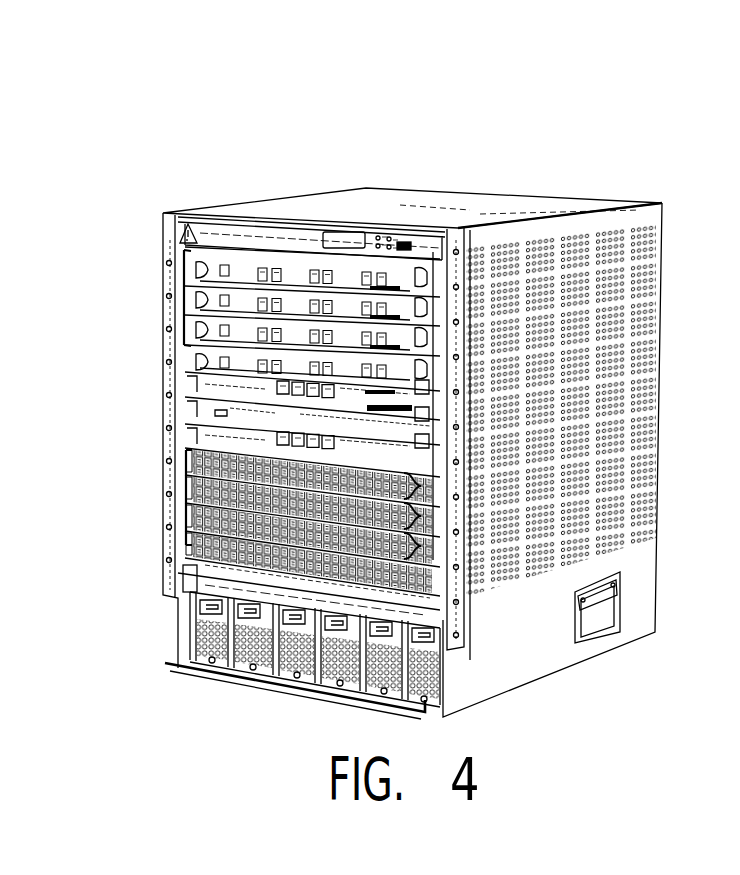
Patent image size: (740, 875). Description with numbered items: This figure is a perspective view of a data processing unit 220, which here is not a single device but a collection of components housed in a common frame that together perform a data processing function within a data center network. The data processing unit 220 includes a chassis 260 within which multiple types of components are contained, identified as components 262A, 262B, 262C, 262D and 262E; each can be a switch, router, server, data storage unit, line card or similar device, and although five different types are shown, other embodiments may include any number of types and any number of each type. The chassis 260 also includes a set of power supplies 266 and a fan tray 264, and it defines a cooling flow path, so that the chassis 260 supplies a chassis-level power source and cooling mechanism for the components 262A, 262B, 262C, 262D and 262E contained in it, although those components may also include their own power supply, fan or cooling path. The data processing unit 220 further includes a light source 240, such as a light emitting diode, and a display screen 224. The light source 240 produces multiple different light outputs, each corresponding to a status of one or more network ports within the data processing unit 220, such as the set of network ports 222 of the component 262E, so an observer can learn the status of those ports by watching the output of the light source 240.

The data processing unit 220 is at (204, 80).
The set of network ports 222 is at (412, 514).
The display screen 224 is at (333, 232).
The light source 240 is at (383, 232).
The chassis 260 is at (481, 222).
The component 262A is at (185, 280).
The component 262B is at (213, 375).
The component 262C is at (220, 403).
The component 262D is at (215, 433).
The component 262E is at (186, 497).
The fan tray 264 is at (215, 578).
The set of power supplies 266 is at (190, 667).